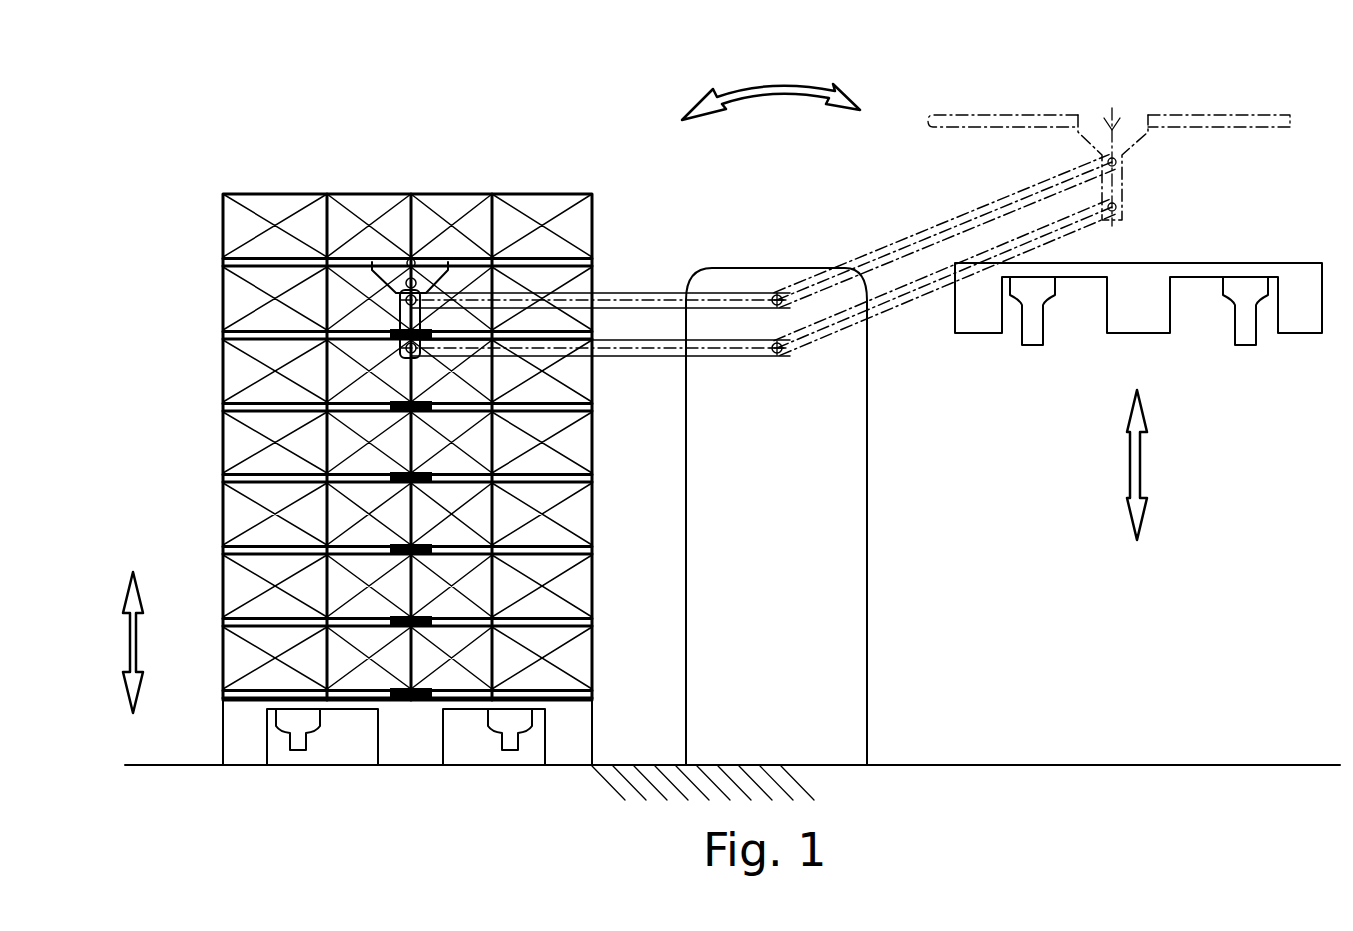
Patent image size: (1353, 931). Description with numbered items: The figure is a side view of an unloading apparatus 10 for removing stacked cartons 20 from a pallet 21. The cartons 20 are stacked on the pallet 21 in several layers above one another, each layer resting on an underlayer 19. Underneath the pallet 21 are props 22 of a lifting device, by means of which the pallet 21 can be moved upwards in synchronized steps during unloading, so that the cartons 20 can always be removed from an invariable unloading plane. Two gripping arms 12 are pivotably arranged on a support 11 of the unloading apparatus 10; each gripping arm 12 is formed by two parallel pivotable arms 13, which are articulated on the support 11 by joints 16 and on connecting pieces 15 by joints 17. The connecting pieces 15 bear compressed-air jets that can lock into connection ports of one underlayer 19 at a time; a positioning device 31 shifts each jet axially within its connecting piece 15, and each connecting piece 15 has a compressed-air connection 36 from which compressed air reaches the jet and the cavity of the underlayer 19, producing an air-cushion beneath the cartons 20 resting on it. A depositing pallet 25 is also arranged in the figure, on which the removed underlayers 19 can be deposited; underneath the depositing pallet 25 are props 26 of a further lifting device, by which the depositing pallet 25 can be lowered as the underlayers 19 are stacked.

The unloading apparatus 10 is at (617, 167).
The support 11 is at (797, 682).
The gripping arms 12 is at (636, 262).
The pivotable arms 13 is at (668, 345).
The connecting pieces 15 is at (372, 276).
The joints 16 is at (785, 350).
The joints 17 is at (400, 298).
The underlayer 19 is at (569, 258).
The cartons 20 is at (522, 226).
The pallet 21 is at (248, 740).
The props 22 is at (297, 722).
The depositing pallet 25 is at (1293, 288).
The props 26 is at (1240, 330).
The positioning device 31 is at (413, 259).
The compressed-air connection 36 is at (406, 283).